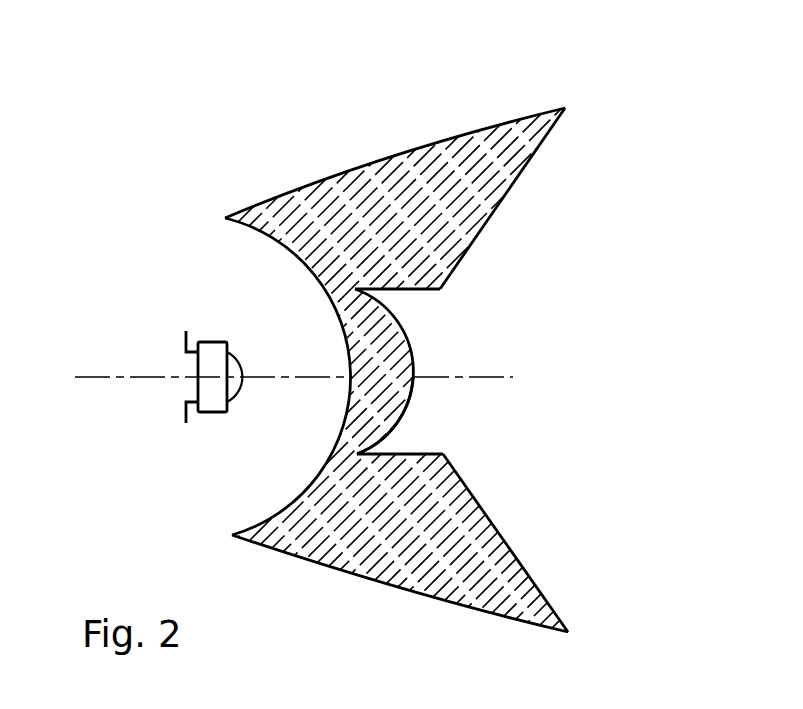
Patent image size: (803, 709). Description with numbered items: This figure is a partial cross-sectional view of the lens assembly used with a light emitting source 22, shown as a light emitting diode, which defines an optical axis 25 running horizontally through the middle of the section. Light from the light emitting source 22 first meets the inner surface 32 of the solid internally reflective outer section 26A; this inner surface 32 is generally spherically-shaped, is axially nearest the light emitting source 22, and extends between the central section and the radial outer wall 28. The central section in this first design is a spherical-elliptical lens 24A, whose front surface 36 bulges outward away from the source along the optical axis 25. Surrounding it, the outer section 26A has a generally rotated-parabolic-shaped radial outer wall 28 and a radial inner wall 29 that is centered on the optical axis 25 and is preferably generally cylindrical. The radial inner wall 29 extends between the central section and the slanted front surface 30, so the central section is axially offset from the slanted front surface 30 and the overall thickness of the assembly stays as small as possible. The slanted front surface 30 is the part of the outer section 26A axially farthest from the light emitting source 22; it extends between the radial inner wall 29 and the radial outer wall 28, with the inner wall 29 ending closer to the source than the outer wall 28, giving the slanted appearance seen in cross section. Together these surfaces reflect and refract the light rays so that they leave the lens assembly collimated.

The light emitting source 22 is at (213, 347).
The spherical-elliptical lens 24A is at (410, 358).
The optical axis 25 is at (503, 372).
The outer section 26A is at (440, 220).
The radial outer wall 28 is at (453, 140).
The radial inner wall 29 is at (420, 291).
The slanted front surface 30 is at (517, 177).
The inner surface 32 is at (305, 266).
The front surface 36 is at (410, 396).